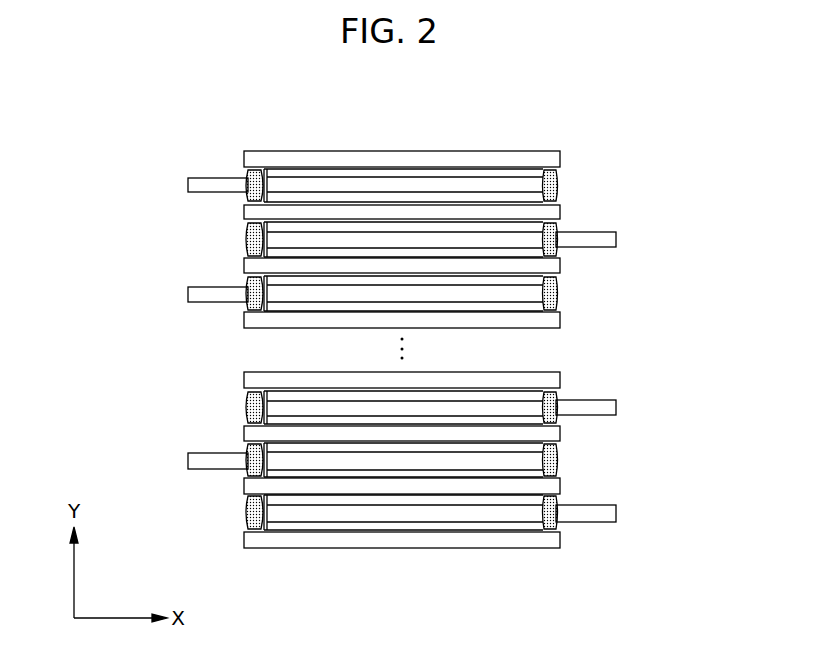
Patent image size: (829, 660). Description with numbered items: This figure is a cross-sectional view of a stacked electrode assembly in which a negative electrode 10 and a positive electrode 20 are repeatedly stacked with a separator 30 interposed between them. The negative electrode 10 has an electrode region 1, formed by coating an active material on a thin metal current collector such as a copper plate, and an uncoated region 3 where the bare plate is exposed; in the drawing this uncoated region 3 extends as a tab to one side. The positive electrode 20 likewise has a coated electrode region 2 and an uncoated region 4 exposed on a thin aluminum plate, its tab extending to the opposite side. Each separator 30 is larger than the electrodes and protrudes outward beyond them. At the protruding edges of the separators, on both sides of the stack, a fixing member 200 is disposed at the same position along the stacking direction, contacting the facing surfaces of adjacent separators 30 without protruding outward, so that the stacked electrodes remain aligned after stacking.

The separator 30 is at (560, 158).
The positive electrode 20 is at (311, 211).
The electrode region 2 is at (274, 183).
The uncoated region 4 is at (188, 189).
The negative electrode 10 is at (496, 257).
The electrode region 1 is at (528, 243).
The uncoated region 3 is at (616, 240).
The fixing member 200 is at (557, 296).